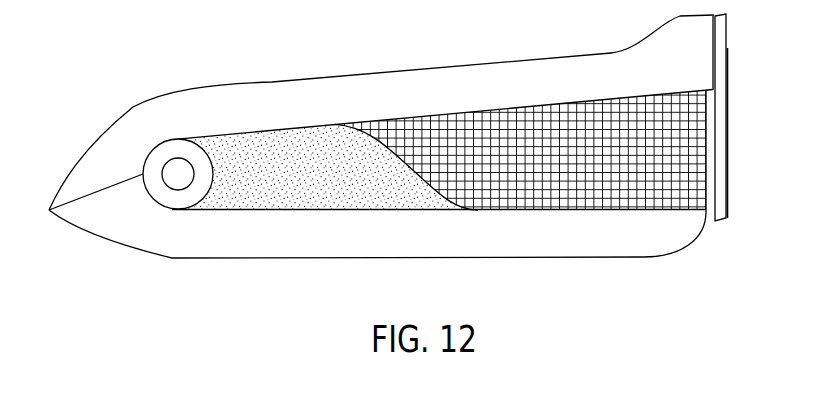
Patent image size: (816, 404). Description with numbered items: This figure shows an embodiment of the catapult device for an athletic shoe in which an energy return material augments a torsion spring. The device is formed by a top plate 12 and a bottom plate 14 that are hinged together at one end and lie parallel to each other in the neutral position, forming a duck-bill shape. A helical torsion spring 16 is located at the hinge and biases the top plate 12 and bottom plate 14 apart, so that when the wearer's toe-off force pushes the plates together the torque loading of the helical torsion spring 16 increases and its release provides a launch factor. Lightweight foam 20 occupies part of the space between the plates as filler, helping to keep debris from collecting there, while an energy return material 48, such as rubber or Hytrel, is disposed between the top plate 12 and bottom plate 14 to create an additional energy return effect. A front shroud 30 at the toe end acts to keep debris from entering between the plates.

The top plate 12 is at (332, 91).
The bottom plate 14 is at (397, 247).
The helical torsion spring 16 is at (165, 194).
The lightweight foam 20 is at (254, 149).
The energy return material 48 is at (556, 120).
The front shroud 30 is at (721, 148).